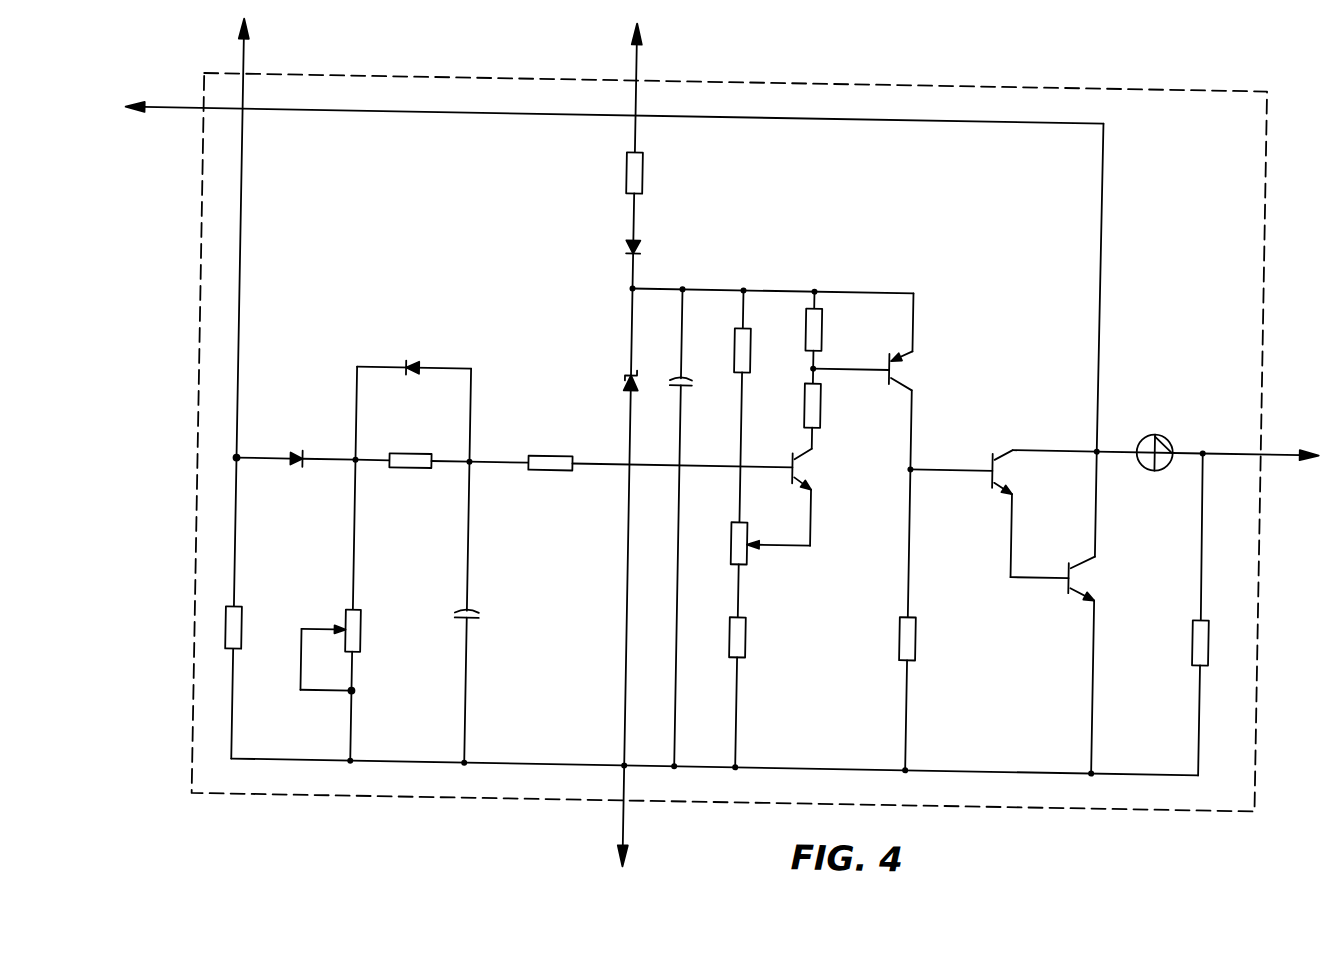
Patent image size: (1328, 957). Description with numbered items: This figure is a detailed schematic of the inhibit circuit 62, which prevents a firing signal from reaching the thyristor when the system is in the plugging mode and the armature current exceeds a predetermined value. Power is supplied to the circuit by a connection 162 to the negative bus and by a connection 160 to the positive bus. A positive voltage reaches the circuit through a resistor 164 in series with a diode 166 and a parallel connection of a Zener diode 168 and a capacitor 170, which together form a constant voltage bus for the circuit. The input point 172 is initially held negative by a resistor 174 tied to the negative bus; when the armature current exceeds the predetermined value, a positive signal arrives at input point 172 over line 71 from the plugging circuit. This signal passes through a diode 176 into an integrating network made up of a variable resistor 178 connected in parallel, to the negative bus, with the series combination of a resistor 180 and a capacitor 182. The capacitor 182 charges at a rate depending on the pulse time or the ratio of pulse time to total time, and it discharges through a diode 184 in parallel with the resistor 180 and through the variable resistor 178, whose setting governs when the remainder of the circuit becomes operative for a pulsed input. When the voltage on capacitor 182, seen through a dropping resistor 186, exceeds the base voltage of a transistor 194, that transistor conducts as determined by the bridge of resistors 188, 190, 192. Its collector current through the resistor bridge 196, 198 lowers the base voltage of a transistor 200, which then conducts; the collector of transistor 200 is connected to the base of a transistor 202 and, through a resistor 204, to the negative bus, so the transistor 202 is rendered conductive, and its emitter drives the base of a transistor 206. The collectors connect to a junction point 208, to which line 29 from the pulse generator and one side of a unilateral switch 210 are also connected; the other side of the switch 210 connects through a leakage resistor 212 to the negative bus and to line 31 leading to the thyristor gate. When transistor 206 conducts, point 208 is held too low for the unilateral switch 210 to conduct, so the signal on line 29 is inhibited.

The line 29 is at (164, 114).
The line 31 is at (1284, 438).
The inhibit circuit 62 is at (1049, 63).
The line 71 is at (240, 58).
The connection 160 is at (634, 63).
The connection 162 is at (633, 830).
The resistor 164 is at (642, 186).
The diode 166 is at (643, 240).
The Zener diode 168 is at (626, 370).
The capacitor 170 is at (697, 385).
The input point 172 is at (238, 458).
The resistor 174 is at (247, 621).
The diode 176 is at (294, 470).
The variable resistor 178 is at (366, 638).
The resistor 180 is at (410, 456).
The capacitor 182 is at (479, 604).
The diode 184 is at (410, 364).
The dropping resistor 186 is at (540, 472).
The resistor 188 is at (733, 348).
The resistor 190 is at (751, 559).
The resistor 192 is at (752, 636).
The transistor 194 is at (806, 465).
The resistor 196 is at (822, 405).
The resistor 198 is at (822, 326).
The transistor 200 is at (906, 364).
The transistor 202 is at (1004, 472).
The resistor 204 is at (922, 633).
The transistor 206 is at (1090, 574).
The junction point 208 is at (1096, 428).
The unilateral switch 210 is at (1152, 426).
The leakage resistor 212 is at (1194, 630).